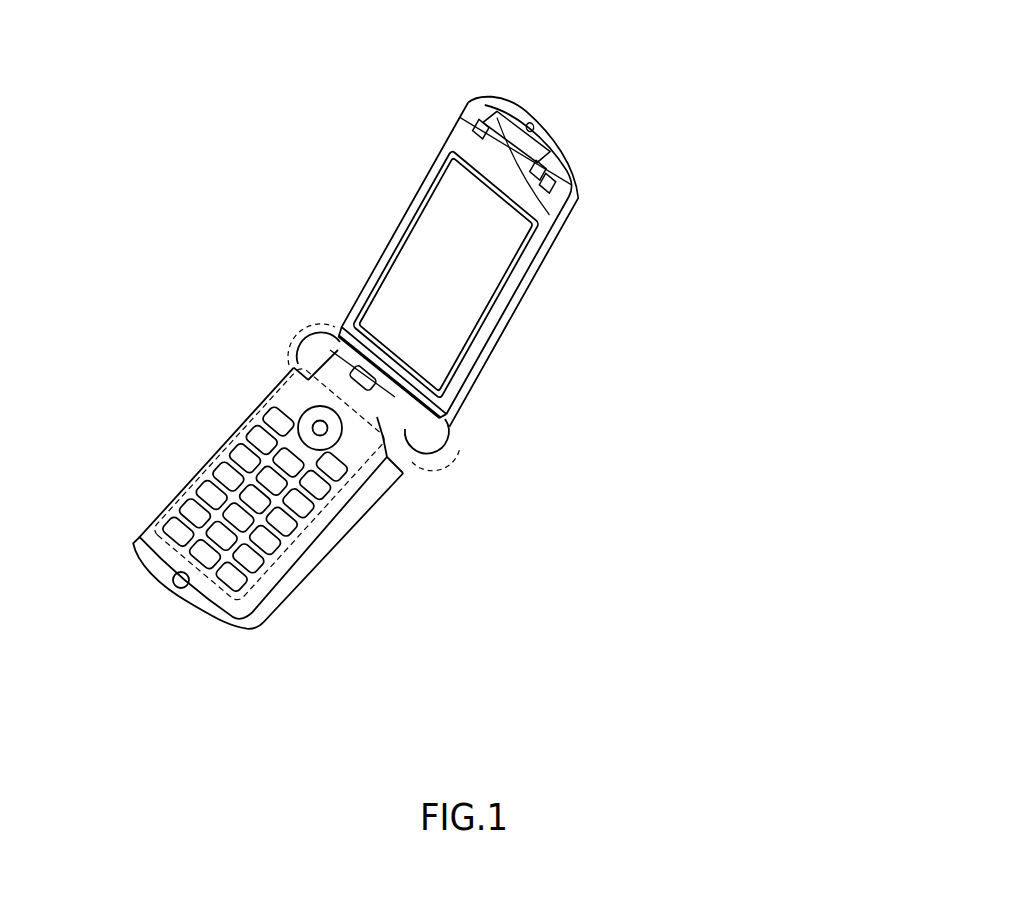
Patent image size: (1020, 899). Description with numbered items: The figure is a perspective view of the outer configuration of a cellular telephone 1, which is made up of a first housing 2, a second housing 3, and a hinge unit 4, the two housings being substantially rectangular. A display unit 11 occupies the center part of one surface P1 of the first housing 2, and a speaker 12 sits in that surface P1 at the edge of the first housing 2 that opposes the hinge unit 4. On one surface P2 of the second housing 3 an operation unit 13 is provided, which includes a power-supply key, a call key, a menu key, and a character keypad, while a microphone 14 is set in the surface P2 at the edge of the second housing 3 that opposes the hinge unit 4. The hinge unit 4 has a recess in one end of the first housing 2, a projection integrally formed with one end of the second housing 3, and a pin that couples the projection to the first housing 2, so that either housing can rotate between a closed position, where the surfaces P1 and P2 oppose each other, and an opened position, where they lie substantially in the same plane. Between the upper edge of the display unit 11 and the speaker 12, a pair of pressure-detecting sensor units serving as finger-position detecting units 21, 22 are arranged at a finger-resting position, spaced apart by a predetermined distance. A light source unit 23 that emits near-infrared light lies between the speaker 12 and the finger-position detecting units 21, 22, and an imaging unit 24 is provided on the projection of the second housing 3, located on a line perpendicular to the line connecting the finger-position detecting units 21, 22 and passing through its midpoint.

The cellular telephone 1 is at (708, 42).
The first housing 2 is at (530, 290).
The second housing 3 is at (355, 512).
The hinge unit 4 is at (412, 458).
The display unit 11 is at (403, 260).
The speaker 12 is at (533, 124).
The operation unit 13 is at (213, 443).
The microphone 14 is at (181, 590).
The finger-position detecting unit 21 is at (548, 178).
The finger-position detecting unit 22 is at (558, 192).
The light source unit 23 is at (492, 133).
The imaging unit 24 is at (383, 376).
The surface P1 is at (457, 141).
The surface P2 is at (148, 532).